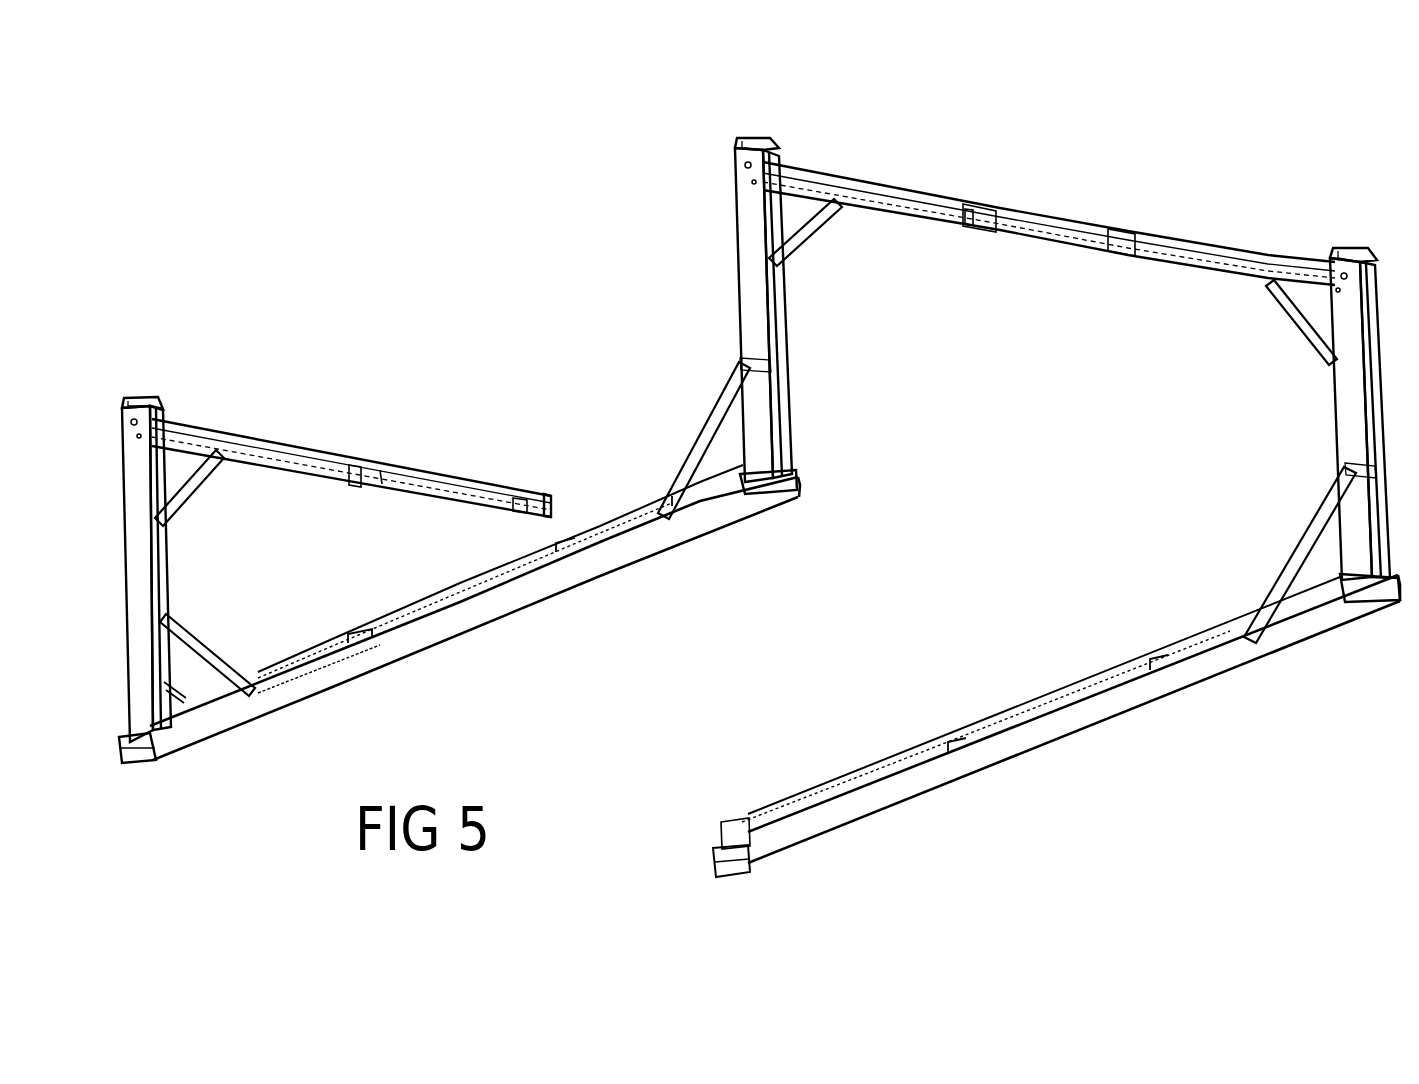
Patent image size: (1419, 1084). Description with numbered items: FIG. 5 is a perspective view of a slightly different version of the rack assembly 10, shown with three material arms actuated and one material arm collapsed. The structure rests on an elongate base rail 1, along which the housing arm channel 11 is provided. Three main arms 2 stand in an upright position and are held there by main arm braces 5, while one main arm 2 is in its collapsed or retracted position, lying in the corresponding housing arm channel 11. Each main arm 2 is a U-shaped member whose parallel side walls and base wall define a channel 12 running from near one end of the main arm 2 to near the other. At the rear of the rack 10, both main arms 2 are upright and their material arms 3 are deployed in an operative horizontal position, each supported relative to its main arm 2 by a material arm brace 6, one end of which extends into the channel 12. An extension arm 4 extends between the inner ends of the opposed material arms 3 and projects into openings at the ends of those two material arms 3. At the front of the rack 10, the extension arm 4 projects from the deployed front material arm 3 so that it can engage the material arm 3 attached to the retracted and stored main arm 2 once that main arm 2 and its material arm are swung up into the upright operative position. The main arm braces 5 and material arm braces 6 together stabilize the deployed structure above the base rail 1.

The bottom rail 1 is at (425, 634).
The main arm 2 is at (140, 586).
The material arm 3 is at (284, 443).
The extension arm 4 is at (445, 475).
The main arm brace 5 is at (210, 648).
The material arm brace 6 is at (197, 483).
The rack assembly 10 is at (510, 372).
The housing arm channel 11 is at (315, 640).
The channel 12 is at (180, 692).